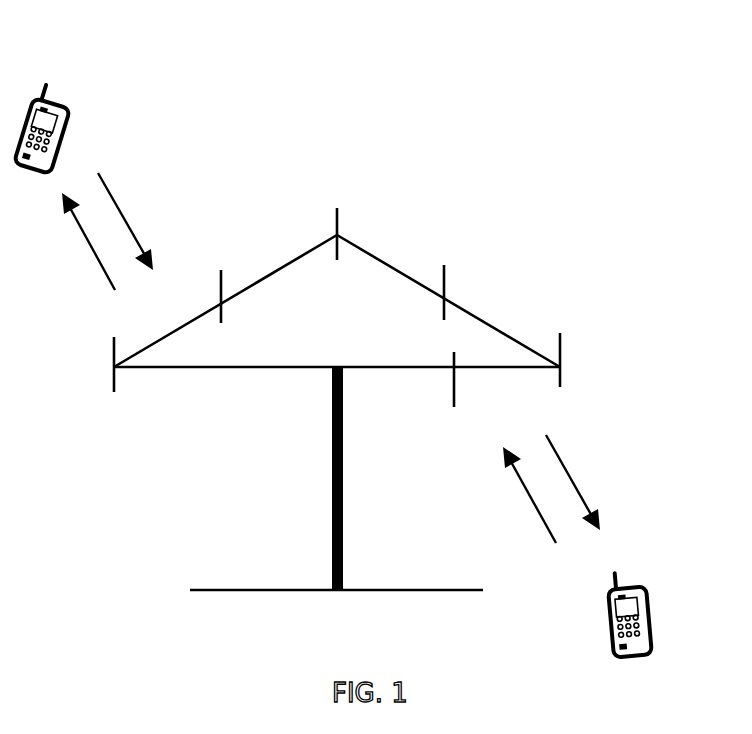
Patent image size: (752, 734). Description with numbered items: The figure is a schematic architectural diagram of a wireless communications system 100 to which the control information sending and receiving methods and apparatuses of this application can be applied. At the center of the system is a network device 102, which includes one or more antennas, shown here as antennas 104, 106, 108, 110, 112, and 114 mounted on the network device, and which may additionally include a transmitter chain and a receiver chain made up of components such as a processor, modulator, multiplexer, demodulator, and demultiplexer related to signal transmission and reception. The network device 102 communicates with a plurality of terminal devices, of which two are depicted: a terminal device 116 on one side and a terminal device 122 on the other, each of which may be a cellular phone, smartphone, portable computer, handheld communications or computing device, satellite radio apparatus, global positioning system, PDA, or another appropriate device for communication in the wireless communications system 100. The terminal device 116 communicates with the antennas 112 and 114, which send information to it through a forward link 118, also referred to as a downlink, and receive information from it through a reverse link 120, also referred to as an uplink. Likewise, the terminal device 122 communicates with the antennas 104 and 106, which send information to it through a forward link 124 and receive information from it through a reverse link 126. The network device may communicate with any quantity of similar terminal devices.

The communications system 100 is at (507, 100).
The network device 102 is at (343, 523).
The antenna 104 is at (115, 377).
The antenna 106 is at (222, 310).
The antenna 108 is at (340, 222).
The antenna 110 is at (446, 280).
The antenna 112 is at (562, 347).
The antenna 114 is at (455, 395).
The terminal device 116 is at (652, 603).
The forward link 118 is at (565, 458).
The reverse link 120 is at (540, 520).
The terminal device 122 is at (62, 110).
The forward link 124 is at (92, 252).
The reverse link 126 is at (113, 195).